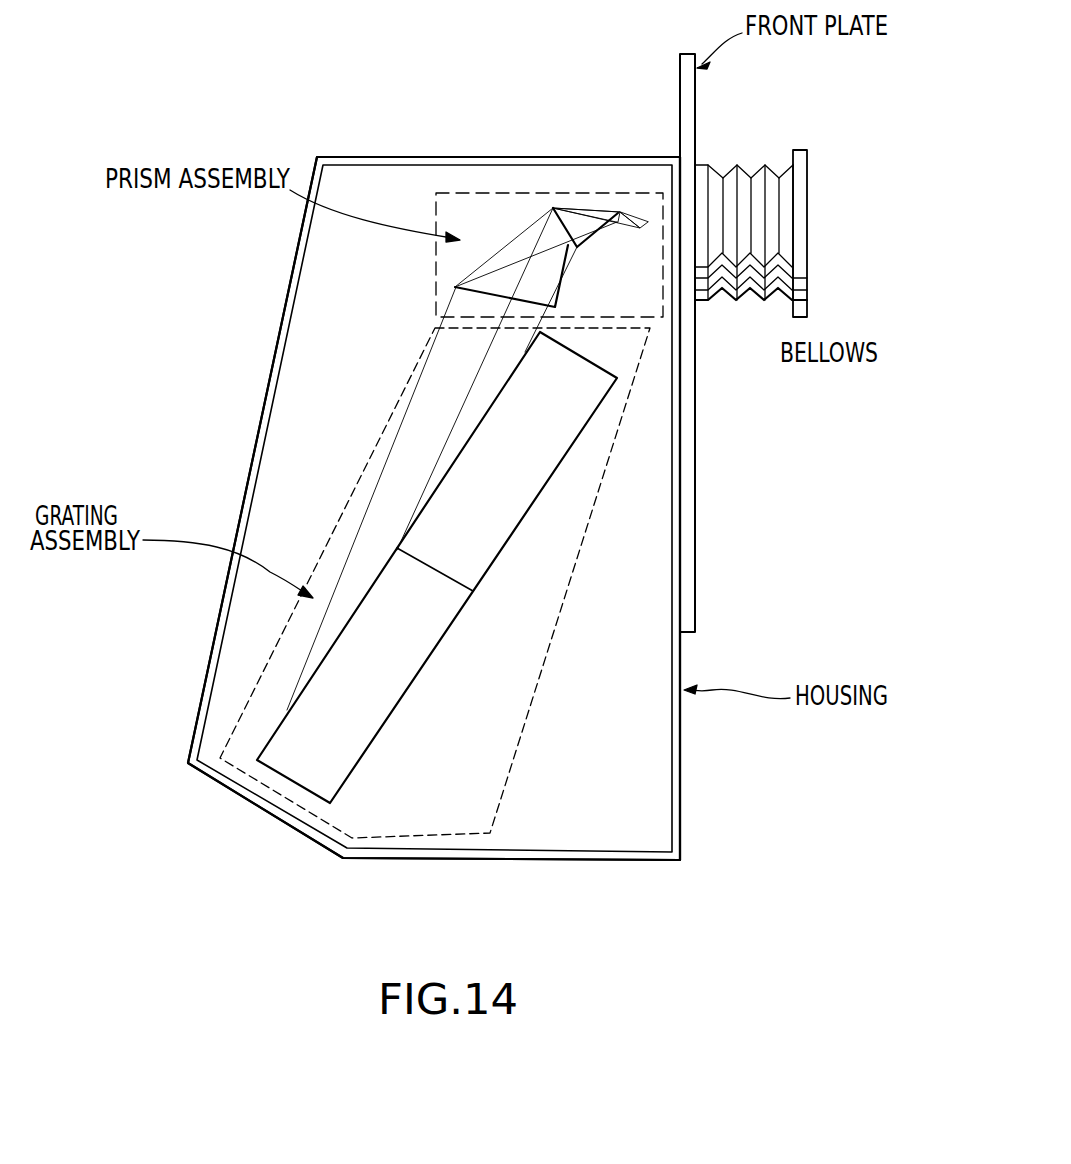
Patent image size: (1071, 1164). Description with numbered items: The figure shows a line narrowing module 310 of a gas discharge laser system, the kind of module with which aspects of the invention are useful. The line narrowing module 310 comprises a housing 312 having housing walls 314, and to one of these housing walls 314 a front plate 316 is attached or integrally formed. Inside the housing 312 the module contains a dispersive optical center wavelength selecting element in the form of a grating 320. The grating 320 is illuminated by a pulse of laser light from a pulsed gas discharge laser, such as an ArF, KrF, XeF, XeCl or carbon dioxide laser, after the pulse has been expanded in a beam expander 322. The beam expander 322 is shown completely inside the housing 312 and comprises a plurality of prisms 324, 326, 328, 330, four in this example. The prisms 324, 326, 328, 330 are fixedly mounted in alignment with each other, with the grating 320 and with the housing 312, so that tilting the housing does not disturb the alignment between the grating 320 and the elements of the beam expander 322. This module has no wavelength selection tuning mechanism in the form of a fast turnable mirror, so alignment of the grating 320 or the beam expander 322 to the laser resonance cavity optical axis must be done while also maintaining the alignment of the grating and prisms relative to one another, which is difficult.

The line narrowing module 310 is at (160, 645).
The housing 312 is at (352, 373).
The housing walls 314 is at (500, 152).
The front plate 316 is at (690, 441).
The grating 320 is at (523, 468).
The beam expander 322 is at (466, 255).
The prism 324 is at (652, 234).
The prism 326 is at (642, 230).
The prism 328 is at (593, 232).
The prism 330 is at (532, 277).